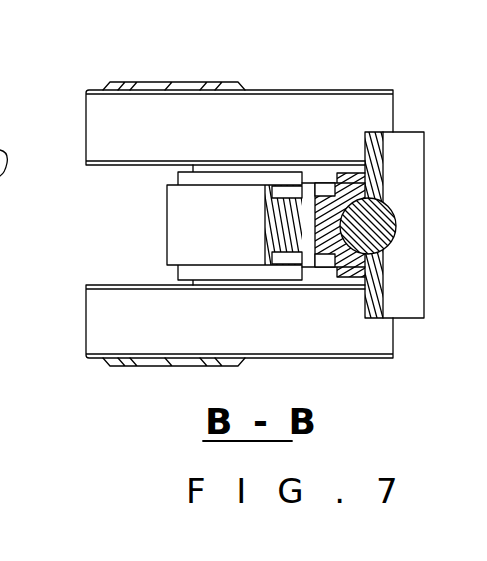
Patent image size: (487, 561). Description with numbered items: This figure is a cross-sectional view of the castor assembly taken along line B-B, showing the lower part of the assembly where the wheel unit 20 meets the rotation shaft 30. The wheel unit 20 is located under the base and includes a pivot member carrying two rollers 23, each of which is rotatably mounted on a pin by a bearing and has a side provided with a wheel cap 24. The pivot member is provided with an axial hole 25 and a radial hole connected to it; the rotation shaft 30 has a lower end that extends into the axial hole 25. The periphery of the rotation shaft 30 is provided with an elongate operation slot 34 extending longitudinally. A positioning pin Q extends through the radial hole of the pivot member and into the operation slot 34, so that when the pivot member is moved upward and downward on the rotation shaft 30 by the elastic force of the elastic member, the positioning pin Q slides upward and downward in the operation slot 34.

The wheel unit 20 is at (180, 222).
The rollers 23 is at (97, 320).
The wheel cap 24 is at (145, 360).
The axial hole 25 is at (382, 237).
The rotation shaft 30 is at (378, 192).
The operation slot 34 is at (380, 190).
The positioning pin Q is at (328, 203).